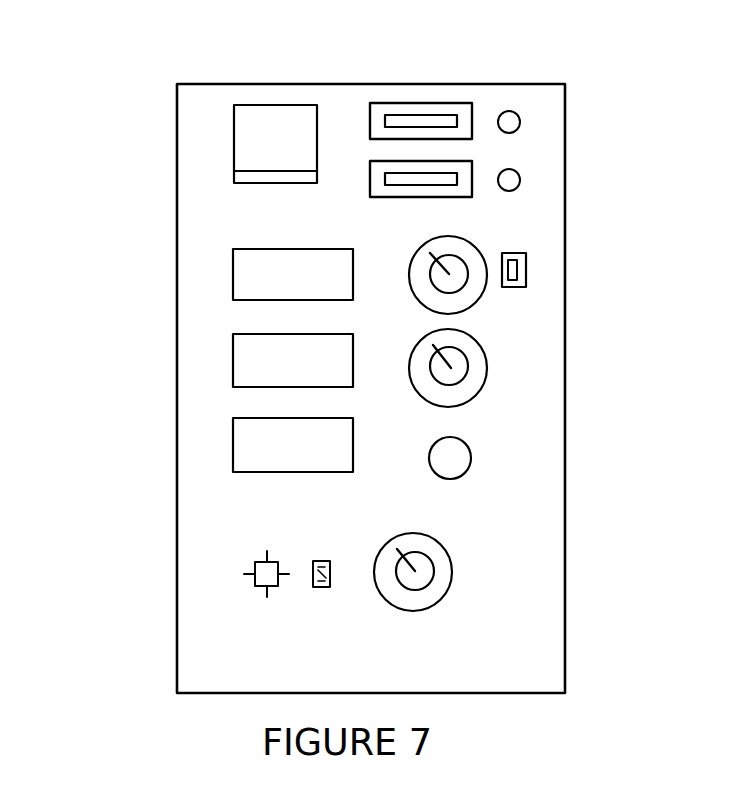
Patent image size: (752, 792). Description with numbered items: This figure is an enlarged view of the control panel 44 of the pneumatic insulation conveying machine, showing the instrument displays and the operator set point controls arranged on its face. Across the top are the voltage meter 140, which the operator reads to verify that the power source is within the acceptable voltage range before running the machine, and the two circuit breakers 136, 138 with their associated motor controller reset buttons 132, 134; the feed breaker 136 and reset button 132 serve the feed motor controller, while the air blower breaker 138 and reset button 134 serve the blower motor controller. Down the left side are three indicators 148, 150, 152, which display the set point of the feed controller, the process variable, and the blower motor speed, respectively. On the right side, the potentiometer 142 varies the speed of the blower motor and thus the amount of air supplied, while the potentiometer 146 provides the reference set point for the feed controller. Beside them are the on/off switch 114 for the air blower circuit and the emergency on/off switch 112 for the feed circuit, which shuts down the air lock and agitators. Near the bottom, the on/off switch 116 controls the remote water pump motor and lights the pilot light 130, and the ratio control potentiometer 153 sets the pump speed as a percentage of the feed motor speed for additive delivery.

The control panel 44 is at (488, 103).
The on/off switch 112 is at (470, 450).
The on/off switch 114 is at (528, 262).
The on/off switch 116 is at (330, 577).
The pilot light 130 is at (262, 572).
The motor controller reset button 132 is at (520, 120).
The motor controller reset button 134 is at (520, 178).
The circuit breaker 136 is at (408, 177).
The circuit breaker 138 is at (393, 120).
The voltage meter 140 is at (234, 143).
The potentiometer 142 is at (475, 251).
The potentiometer 146 is at (482, 355).
The indicator 148 is at (233, 277).
The process variable indicator 150 is at (233, 365).
The indicator 152 is at (233, 447).
The ratio control potentiometer 153 is at (445, 554).